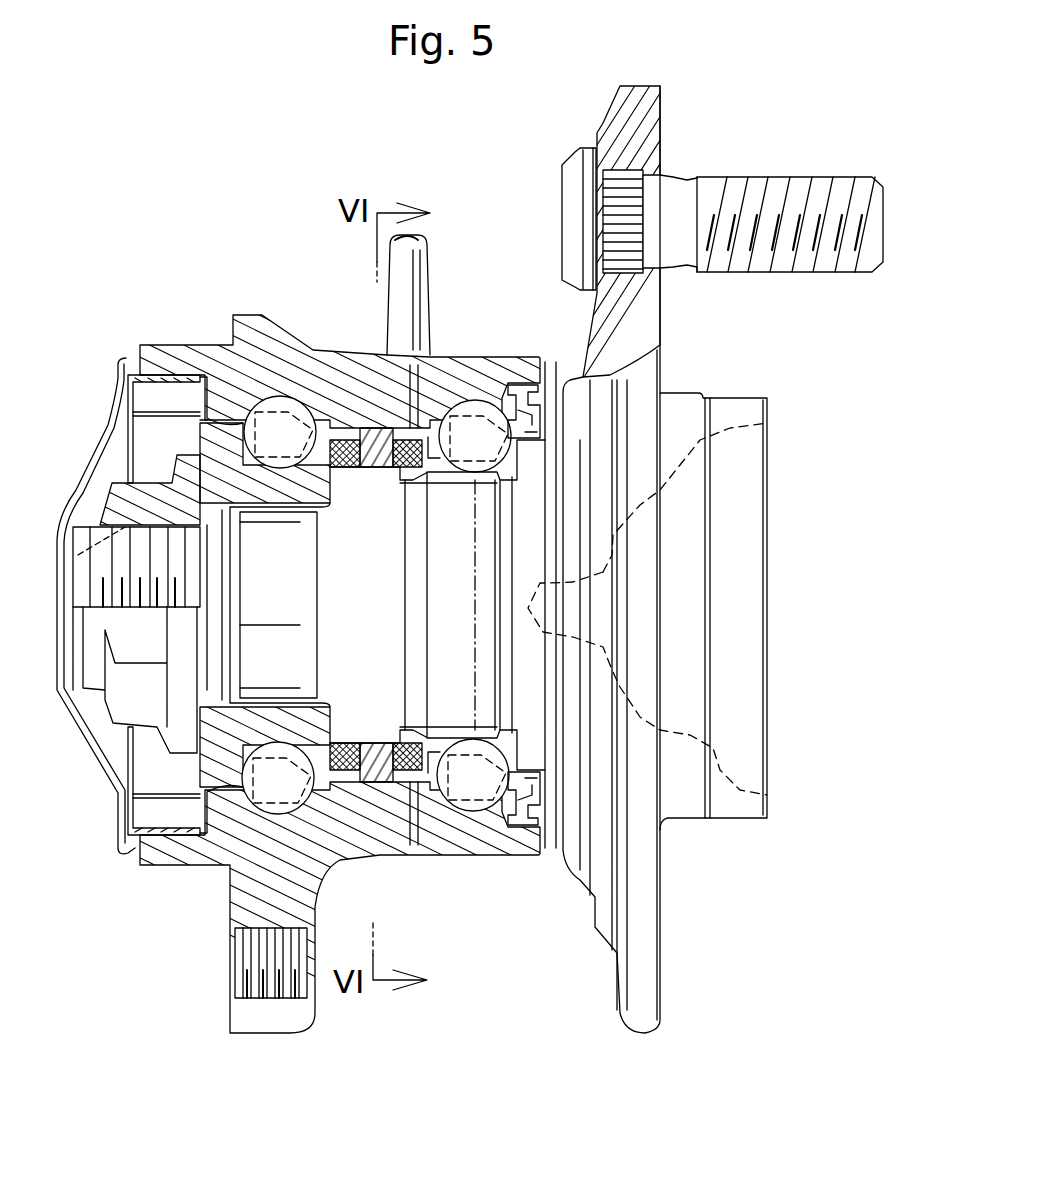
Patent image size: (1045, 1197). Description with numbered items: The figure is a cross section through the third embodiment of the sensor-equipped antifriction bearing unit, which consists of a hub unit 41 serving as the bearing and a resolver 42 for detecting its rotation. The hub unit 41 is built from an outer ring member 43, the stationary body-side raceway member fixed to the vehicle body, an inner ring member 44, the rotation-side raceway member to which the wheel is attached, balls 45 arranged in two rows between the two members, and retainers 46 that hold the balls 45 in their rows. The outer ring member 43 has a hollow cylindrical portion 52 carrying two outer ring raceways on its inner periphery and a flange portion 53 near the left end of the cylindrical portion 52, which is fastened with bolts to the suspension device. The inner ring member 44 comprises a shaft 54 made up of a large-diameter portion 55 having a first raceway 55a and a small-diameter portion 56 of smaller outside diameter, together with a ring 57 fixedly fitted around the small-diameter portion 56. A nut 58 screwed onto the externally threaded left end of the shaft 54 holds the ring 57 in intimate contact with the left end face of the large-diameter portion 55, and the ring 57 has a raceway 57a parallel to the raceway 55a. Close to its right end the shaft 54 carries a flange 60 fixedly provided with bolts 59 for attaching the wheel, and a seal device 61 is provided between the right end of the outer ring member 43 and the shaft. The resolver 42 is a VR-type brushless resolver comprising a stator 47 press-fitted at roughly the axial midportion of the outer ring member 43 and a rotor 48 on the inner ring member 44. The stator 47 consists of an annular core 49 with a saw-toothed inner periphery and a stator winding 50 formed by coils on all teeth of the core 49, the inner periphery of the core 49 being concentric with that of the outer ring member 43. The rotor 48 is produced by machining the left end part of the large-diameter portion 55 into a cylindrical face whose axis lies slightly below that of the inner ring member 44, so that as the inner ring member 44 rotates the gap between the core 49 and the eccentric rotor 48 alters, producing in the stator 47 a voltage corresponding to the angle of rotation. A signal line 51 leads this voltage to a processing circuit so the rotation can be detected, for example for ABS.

The hub unit 41 is at (207, 293).
The resolver 42 is at (343, 440).
The outer ring member 43 is at (258, 343).
The inner ring member 44 is at (457, 460).
The balls 45 is at (270, 805).
The retainers 46 is at (323, 782).
The stator 47 is at (366, 428).
The rotor 48 is at (373, 470).
The annular core 49 is at (380, 780).
The stator winding 50 is at (430, 782).
The harness cable 51 is at (413, 258).
The hollow cylindrical portion 52 is at (425, 855).
The flange portion 53 is at (265, 1020).
The shaft 54 is at (463, 577).
The large-diameter portion 55 is at (458, 680).
The first raceway 55a is at (510, 477).
The small-diameter portion 56 is at (245, 660).
The ring 57 is at (203, 447).
The raceway 57a is at (128, 412).
The nut 58 is at (123, 678).
The bolts 59 is at (750, 200).
The flange 60 is at (648, 128).
The seal device 61 is at (540, 400).